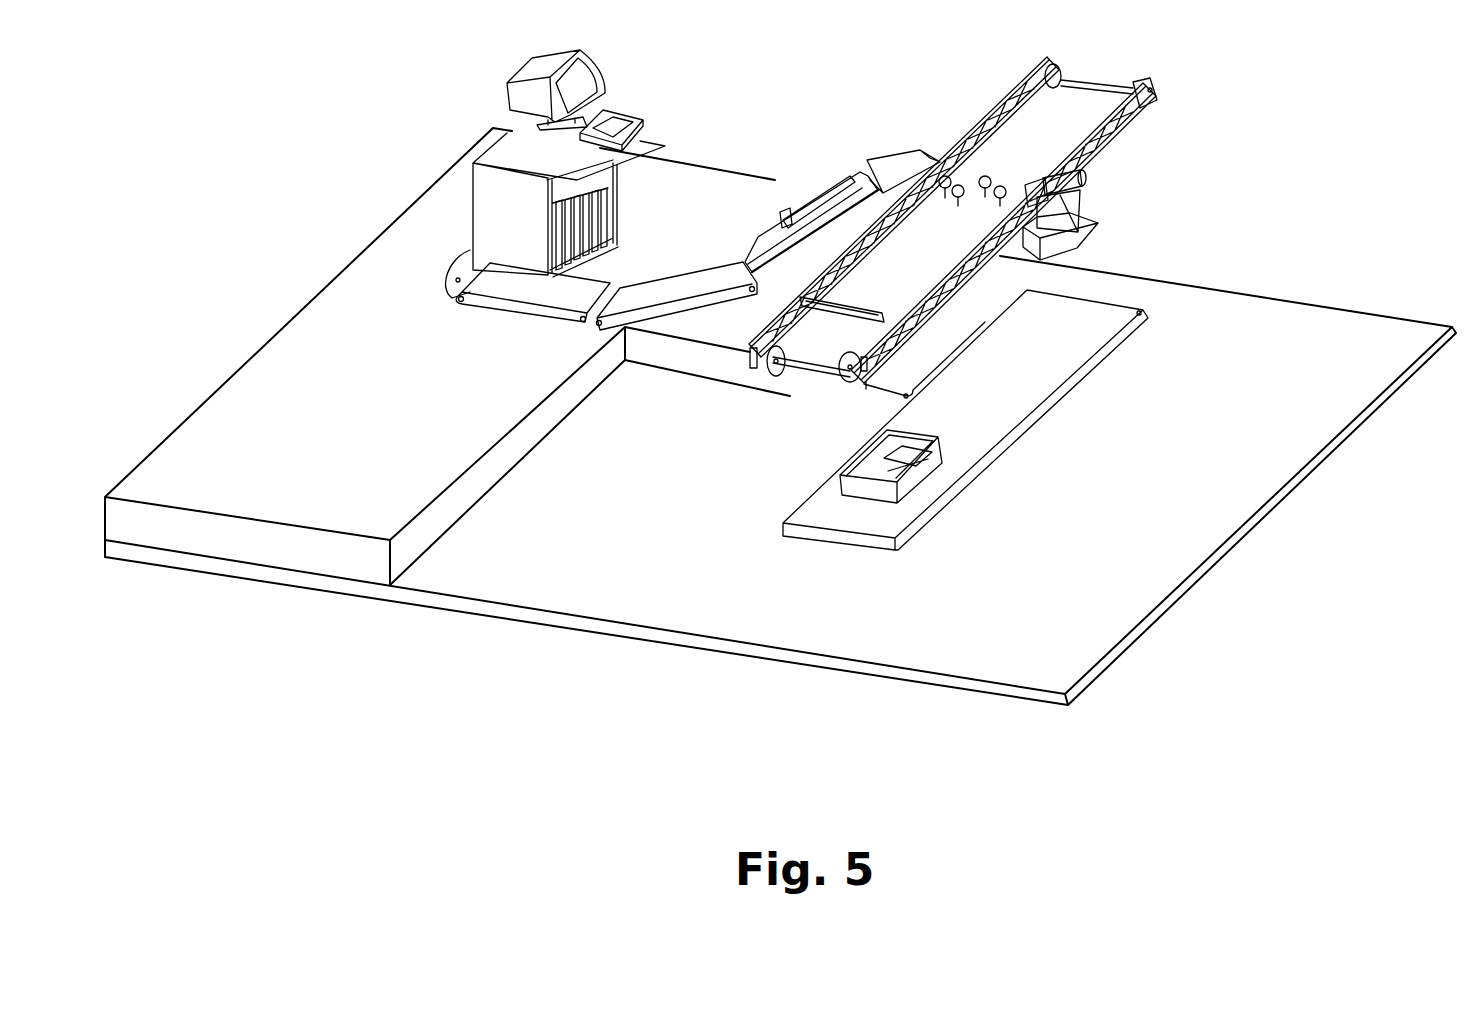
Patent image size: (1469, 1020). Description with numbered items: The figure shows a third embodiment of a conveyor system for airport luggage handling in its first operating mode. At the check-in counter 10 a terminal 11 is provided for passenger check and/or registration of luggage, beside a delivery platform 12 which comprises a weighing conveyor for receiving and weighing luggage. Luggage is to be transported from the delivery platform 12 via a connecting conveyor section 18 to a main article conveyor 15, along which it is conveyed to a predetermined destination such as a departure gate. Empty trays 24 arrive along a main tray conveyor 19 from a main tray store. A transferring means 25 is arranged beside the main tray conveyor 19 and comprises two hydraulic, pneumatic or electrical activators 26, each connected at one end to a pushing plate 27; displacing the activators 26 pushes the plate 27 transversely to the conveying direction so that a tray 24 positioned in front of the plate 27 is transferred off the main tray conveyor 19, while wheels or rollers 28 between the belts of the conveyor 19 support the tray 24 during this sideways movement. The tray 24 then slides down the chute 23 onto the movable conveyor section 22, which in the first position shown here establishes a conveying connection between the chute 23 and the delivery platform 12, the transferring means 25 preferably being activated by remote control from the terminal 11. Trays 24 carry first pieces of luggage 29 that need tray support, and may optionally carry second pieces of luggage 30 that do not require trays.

The check-in counter 10 is at (445, 121).
The terminal 11 is at (585, 84).
The delivery platform 12 is at (509, 288).
The main article conveyor 15 is at (1042, 383).
The connecting conveyor section 18 is at (907, 368).
The main tray conveyor 19 is at (1123, 108).
The movable conveyor section 22 is at (657, 290).
The chute 23 is at (903, 188).
The tray 24 is at (813, 193).
The transferring means 25 is at (1083, 240).
The activator 26 is at (1060, 178).
The pushing plate 27 is at (1040, 174).
The rollers 28 is at (975, 180).
The first piece of luggage 29 is at (887, 470).
The second piece of luggage 30 is at (830, 342).